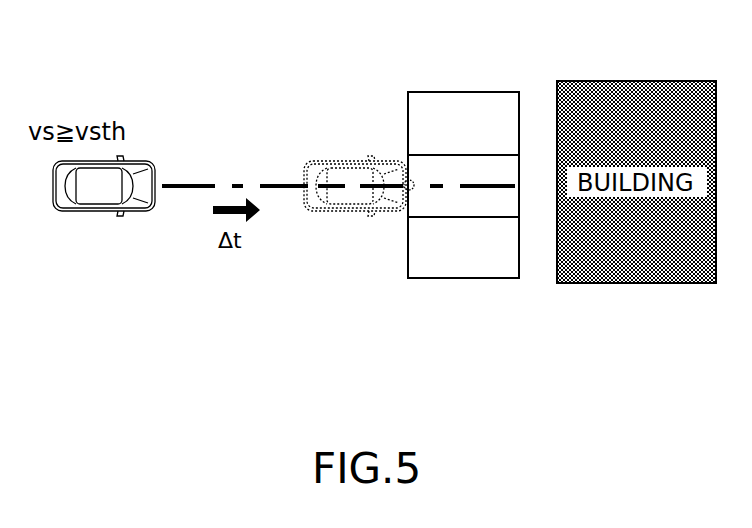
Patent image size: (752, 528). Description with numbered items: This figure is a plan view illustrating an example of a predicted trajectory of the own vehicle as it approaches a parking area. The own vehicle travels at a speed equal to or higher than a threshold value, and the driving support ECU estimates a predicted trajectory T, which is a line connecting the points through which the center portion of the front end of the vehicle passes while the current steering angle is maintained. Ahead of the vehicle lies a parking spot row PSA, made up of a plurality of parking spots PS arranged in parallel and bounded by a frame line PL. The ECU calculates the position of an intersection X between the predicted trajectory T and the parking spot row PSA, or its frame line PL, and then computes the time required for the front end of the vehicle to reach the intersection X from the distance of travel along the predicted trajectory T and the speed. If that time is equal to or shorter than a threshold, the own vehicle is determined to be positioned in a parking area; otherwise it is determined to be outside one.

The parking spot row PSA is at (421, 79).
The frame line PL is at (449, 92).
The parking spot PS is at (498, 107).
The predicted trajectory T is at (258, 182).
The intersection X is at (411, 191).